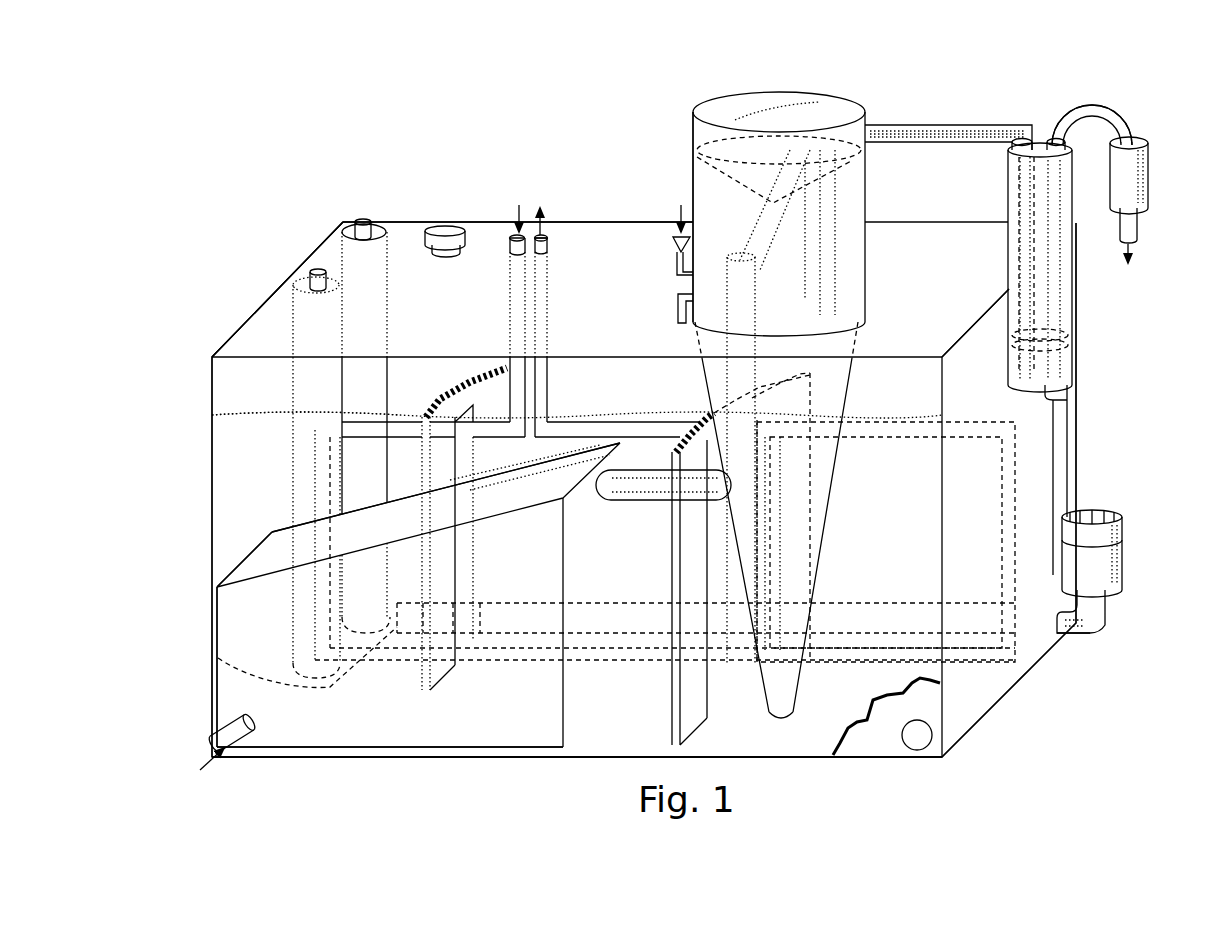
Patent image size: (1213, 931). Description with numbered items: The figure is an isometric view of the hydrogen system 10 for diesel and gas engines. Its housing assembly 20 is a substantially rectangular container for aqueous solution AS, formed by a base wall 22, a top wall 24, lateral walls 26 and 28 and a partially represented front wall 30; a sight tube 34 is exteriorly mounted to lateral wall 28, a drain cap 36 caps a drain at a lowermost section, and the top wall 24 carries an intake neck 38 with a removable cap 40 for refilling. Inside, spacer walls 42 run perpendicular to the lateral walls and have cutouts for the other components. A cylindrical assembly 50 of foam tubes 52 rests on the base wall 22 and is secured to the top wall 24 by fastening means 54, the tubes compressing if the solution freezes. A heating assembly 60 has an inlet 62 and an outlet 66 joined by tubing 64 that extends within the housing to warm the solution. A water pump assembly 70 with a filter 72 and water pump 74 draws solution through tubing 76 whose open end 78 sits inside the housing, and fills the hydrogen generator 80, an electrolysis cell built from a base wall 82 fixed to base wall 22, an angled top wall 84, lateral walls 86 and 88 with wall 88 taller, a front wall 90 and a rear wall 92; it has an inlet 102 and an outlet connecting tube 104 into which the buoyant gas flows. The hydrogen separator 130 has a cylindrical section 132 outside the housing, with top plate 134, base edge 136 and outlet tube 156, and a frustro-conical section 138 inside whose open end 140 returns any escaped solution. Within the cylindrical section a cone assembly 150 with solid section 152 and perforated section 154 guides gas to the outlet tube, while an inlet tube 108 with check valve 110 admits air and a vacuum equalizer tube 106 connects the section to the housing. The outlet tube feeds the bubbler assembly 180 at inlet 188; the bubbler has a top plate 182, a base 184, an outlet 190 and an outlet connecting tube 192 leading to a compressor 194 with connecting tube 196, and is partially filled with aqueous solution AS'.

The hydrogen system 10 is at (288, 140).
The housing assembly 20 is at (276, 288).
The base wall 22 is at (347, 760).
The top wall 24 is at (430, 280).
The lateral wall 26 is at (212, 470).
The lateral wall 28 is at (970, 688).
The front wall 30 is at (874, 745).
The sight tube 34 is at (1068, 440).
The drain cap 36 is at (920, 740).
The intake neck 38 is at (432, 250).
The removable cap 40 is at (448, 227).
The spacer walls 42 is at (440, 398).
The cylindrical assembly 50 is at (335, 246).
The tubes 52 is at (340, 260).
The fastening means 54 is at (360, 223).
The heating assembly 60 is at (550, 237).
The inlet 62 is at (512, 236).
The tubing 64 is at (697, 450).
The outlet 66 is at (536, 236).
The water pump assembly 70 is at (1126, 564).
The filter 72 is at (1085, 514).
The water pump 74 is at (1100, 620).
The tubing 76 is at (1085, 640).
The open end 78 is at (218, 658).
The hydrogen generator 80 is at (457, 762).
The base wall 82 is at (427, 760).
The top wall 84 is at (270, 530).
The lateral wall 86 is at (250, 545).
The lateral wall 88 is at (608, 696).
The front wall 90 is at (262, 698).
The rear wall 92 is at (282, 525).
The inlet 102 is at (222, 770).
The outlet connecting tube 104 is at (645, 487).
The vacuum equalizer tube 106 is at (676, 310).
The inlet tube 108 is at (678, 268).
The check valve 110 is at (676, 243).
The hydrogen separator 130 is at (890, 104).
The cylindrical section 132 is at (840, 192).
The top plate 134 is at (722, 108).
The base edge 136 is at (812, 325).
The frustro-conical section 138 is at (880, 500).
The open end 140 is at (783, 722).
The cone assembly 150 is at (696, 138).
The solid section 152 is at (720, 176).
The perforated section 154 is at (862, 175).
The outlet tube 156 is at (978, 128).
The bubbler assembly 180 is at (1112, 102).
The top plate 182 is at (1016, 166).
The base 184 is at (1060, 396).
The inlet 188 is at (1033, 143).
The outlet 190 is at (1041, 160).
The outlet connecting tube 192 is at (1128, 125).
The compressor 194 is at (1150, 176).
The connecting tube 196 is at (1138, 228).
The aqueous solution AS is at (287, 417).
The aqueous solution AS' is at (1072, 320).